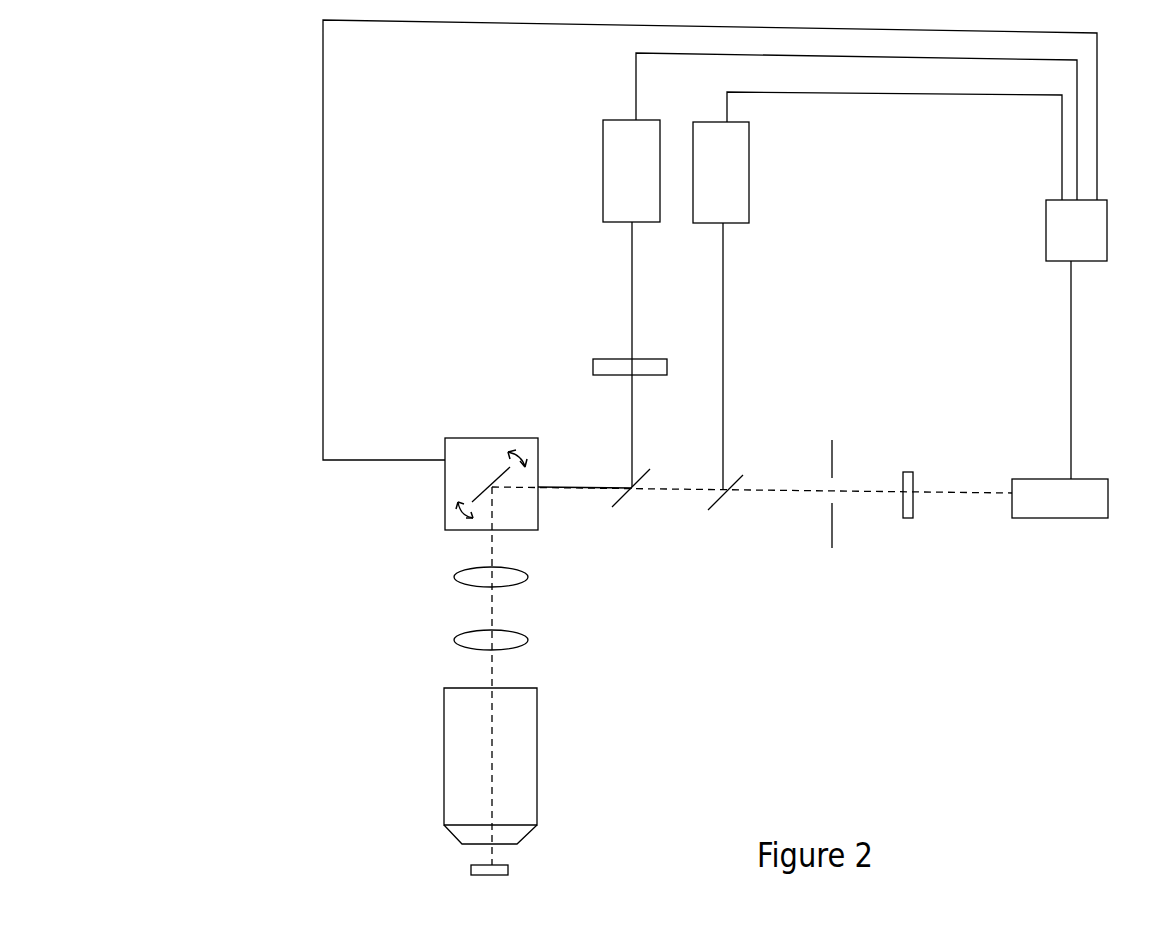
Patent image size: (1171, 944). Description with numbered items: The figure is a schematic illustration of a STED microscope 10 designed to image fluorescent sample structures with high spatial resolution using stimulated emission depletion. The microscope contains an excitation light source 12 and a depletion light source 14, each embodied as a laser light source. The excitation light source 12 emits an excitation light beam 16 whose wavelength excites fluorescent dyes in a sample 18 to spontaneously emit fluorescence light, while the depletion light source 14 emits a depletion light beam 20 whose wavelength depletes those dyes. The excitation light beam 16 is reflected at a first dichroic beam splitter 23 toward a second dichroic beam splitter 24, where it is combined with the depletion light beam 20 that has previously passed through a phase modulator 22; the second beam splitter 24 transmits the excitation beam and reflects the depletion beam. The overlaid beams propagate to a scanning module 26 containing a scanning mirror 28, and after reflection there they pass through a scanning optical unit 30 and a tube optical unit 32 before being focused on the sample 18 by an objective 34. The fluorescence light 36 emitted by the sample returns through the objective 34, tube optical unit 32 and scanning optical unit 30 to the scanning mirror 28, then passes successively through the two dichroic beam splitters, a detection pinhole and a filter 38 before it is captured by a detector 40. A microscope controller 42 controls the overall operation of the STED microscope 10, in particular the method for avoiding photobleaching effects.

The STED microscope 10 is at (262, 292).
The excitation light source 12 is at (742, 152).
The depletion light source 14 is at (614, 156).
The excitation light beam 16 is at (725, 315).
The sample 18 is at (480, 868).
The depletion light beam 20 is at (632, 316).
The phase modulator 22 is at (614, 362).
The first dichroic beam splitter 23 is at (710, 510).
The second dichroic beam splitter 24 is at (618, 499).
The scanning module 26 is at (462, 455).
The scanning mirror 28 is at (480, 492).
The scanning optical unit 30 is at (510, 575).
The tube optical unit 32 is at (508, 643).
The objective 34 is at (462, 775).
The fluorescence light 36 is at (767, 492).
The filter 38 is at (908, 513).
The detector 40 is at (1052, 515).
The microscope controller 42 is at (1136, 206).